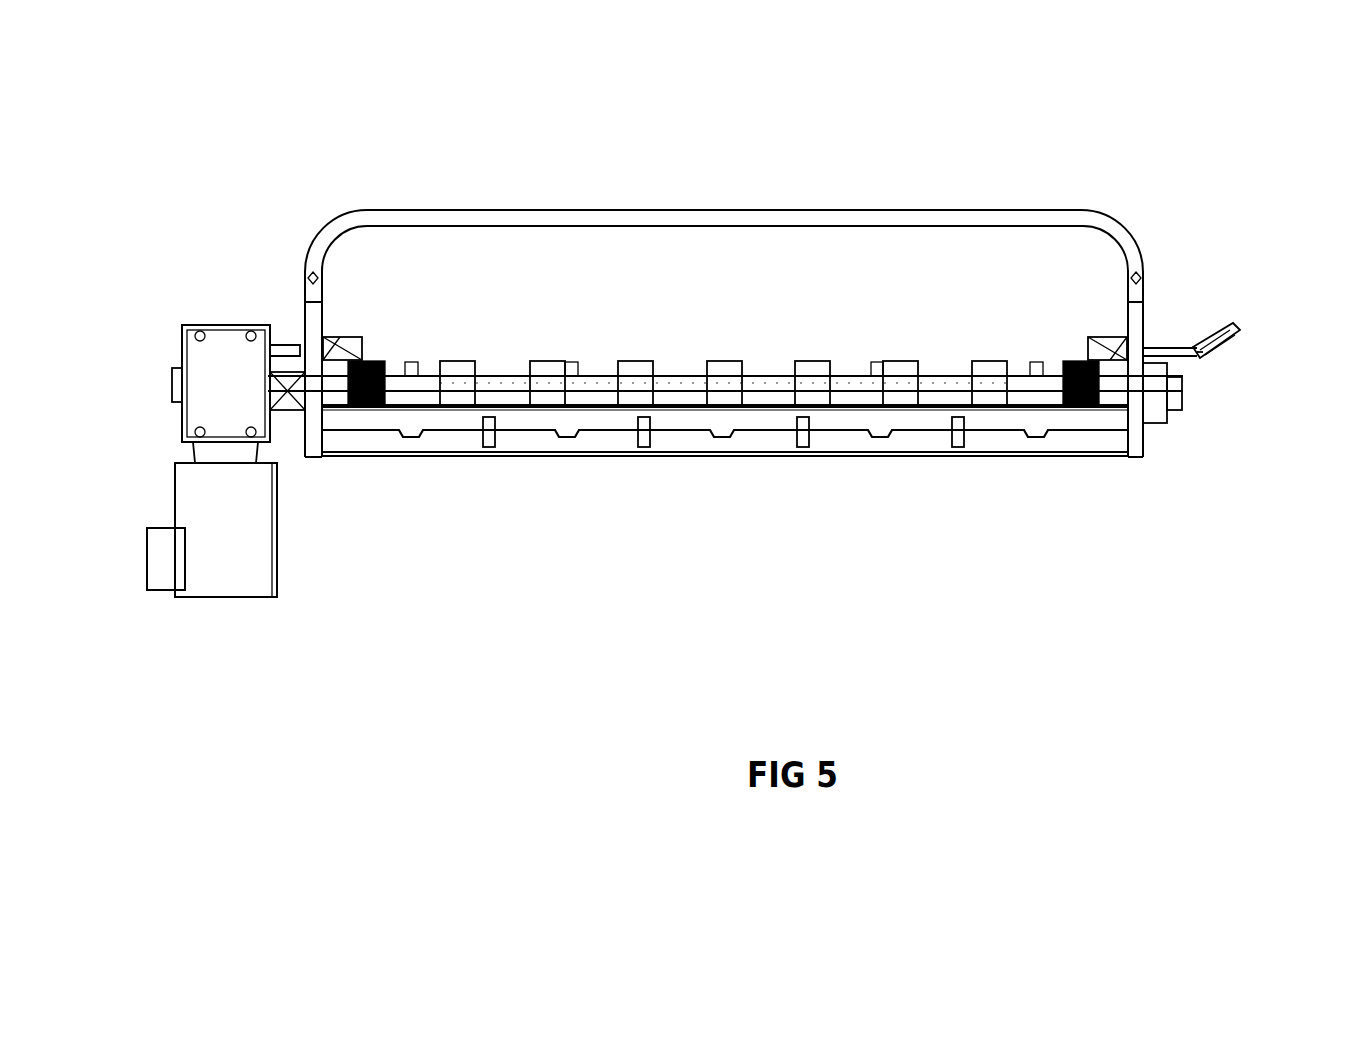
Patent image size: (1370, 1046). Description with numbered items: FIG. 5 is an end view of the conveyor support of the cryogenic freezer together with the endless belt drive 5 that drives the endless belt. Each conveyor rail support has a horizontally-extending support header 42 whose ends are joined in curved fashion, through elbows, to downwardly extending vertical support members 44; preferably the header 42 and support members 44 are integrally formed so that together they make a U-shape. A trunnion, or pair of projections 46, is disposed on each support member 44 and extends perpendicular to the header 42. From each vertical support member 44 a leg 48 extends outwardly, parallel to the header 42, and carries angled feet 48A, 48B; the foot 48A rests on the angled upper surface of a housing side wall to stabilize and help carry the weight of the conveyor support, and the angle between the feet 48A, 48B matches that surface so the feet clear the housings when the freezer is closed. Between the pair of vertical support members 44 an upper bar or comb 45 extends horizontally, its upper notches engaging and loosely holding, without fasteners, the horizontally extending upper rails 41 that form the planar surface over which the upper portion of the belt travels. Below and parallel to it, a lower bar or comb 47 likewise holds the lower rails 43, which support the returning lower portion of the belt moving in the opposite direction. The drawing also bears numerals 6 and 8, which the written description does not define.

The belt drive 5 is at (228, 527).
The rotor 6 is at (715, 375).
The shaft 8 is at (1033, 392).
The upper rails 41 is at (415, 372).
The support header 42 is at (715, 215).
The lower rails 43 is at (488, 432).
The vertical support members 44 is at (318, 302).
The upper bar 45 is at (592, 403).
The trunnion 46 is at (345, 277).
The lower bar 47 is at (855, 438).
The leg 48 is at (1180, 352).
The angled foot 48A is at (1213, 325).
The angled foot 48B is at (1203, 352).